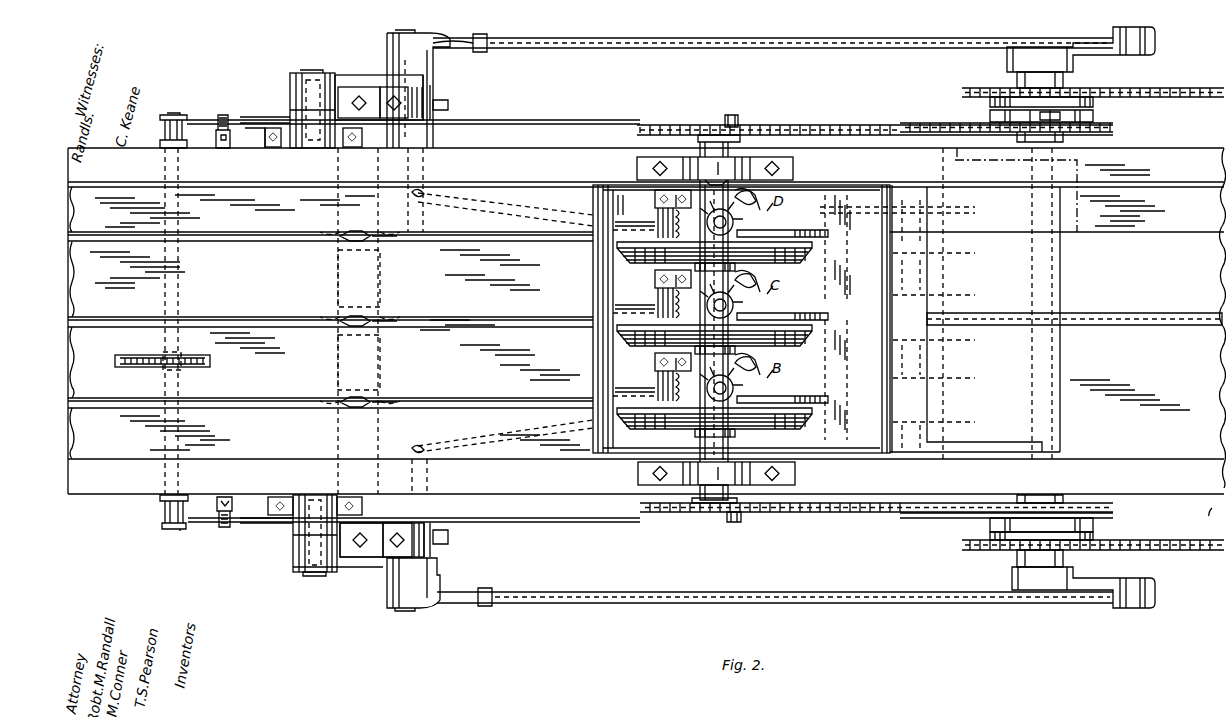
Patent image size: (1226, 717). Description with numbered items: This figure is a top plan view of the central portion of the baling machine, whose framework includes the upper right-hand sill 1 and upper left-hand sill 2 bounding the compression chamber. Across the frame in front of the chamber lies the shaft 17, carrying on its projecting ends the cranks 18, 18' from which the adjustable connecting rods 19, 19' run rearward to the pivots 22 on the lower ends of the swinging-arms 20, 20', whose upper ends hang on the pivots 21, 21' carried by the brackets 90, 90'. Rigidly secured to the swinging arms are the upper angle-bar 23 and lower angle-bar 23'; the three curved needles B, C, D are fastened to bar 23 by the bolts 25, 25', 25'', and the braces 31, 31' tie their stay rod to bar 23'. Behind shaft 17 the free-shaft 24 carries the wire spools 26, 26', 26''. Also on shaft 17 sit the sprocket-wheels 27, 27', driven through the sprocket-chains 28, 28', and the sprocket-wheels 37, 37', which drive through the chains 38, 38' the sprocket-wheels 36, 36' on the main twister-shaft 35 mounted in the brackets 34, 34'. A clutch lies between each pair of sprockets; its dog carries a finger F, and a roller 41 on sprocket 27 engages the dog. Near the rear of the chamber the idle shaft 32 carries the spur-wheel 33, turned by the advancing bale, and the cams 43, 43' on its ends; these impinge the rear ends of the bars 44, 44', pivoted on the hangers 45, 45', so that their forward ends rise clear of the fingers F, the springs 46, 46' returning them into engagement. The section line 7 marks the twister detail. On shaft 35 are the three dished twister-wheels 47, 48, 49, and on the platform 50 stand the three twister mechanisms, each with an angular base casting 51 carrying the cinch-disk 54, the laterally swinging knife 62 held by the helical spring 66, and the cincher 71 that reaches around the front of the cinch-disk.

The upper right-hand sill 1 is at (647, 336).
The upper left-hand sill 2 is at (1203, 144).
The section line 7— 7 is at (598, 190).
The shaft 17 is at (1050, 278).
The crank 18 is at (1101, 583).
The crank 18' is at (1099, 49).
The adjustable connecting rod 19 is at (775, 589).
The adjustable connecting rod 19' is at (773, 56).
The swinging arm 20 is at (358, 564).
The swinging arm 20' is at (379, 82).
The pivot 21 is at (314, 550).
The pivot 21' is at (312, 92).
The pivot 22 is at (406, 30).
The upper angle-bar 23 is at (324, 316).
The lower angle-bar 23' is at (456, 316).
The free-shaft 24 is at (923, 282).
The bolt 25 is at (350, 417).
The bolt 25' is at (350, 305).
The bolt 25'' is at (346, 220).
The spool 26 is at (988, 418).
The spool 26' is at (990, 343).
The spool 26'' is at (981, 213).
The sprocket-wheel 27 is at (1014, 553).
The sprocket-wheel 27' is at (1015, 82).
The sprocket-chain 28 is at (1093, 534).
The sprocket-chain 28' is at (1093, 82).
The brace 31 is at (502, 449).
The brace 31' is at (502, 190).
The idle shaft 32 is at (178, 118).
The spur-wheel 33 is at (222, 365).
The bracket 34 is at (695, 473).
The bracket 34' is at (692, 168).
The main twister-shaft 35 is at (705, 149).
The sprocket-wheel 36 is at (876, 528).
The sprocket-wheel 36' is at (875, 108).
The sprocket-wheel 37 is at (1031, 506).
The sprocket-wheel 37' is at (1026, 132).
The sprocket chain 38 is at (840, 527).
The sprocket chain 38' is at (830, 109).
The roller 41 is at (1080, 115).
The cam 43 is at (154, 513).
The cam 43' is at (157, 130).
The bar 44 is at (414, 535).
The bar 44' is at (413, 107).
The hanger 45 is at (750, 532).
The hanger 45' is at (753, 109).
The helical spring 46 is at (216, 525).
The helical spring 46' is at (238, 107).
The twister-wheel 47 is at (640, 429).
The twister-wheel 48 is at (638, 350).
The twister-wheel 49 is at (640, 265).
The platform 50 is at (593, 346).
The angular casting or base 51 is at (655, 224).
The cinch-disk 54 is at (709, 222).
The knife 62 is at (658, 197).
The helical spring 66 is at (672, 208).
The cincher 71 is at (747, 218).
The bracket 90 is at (266, 534).
The bracket 90' is at (265, 120).
The needle B is at (478, 398).
The needle C is at (450, 318).
The needle D is at (646, 269).
The finger F is at (1055, 118).